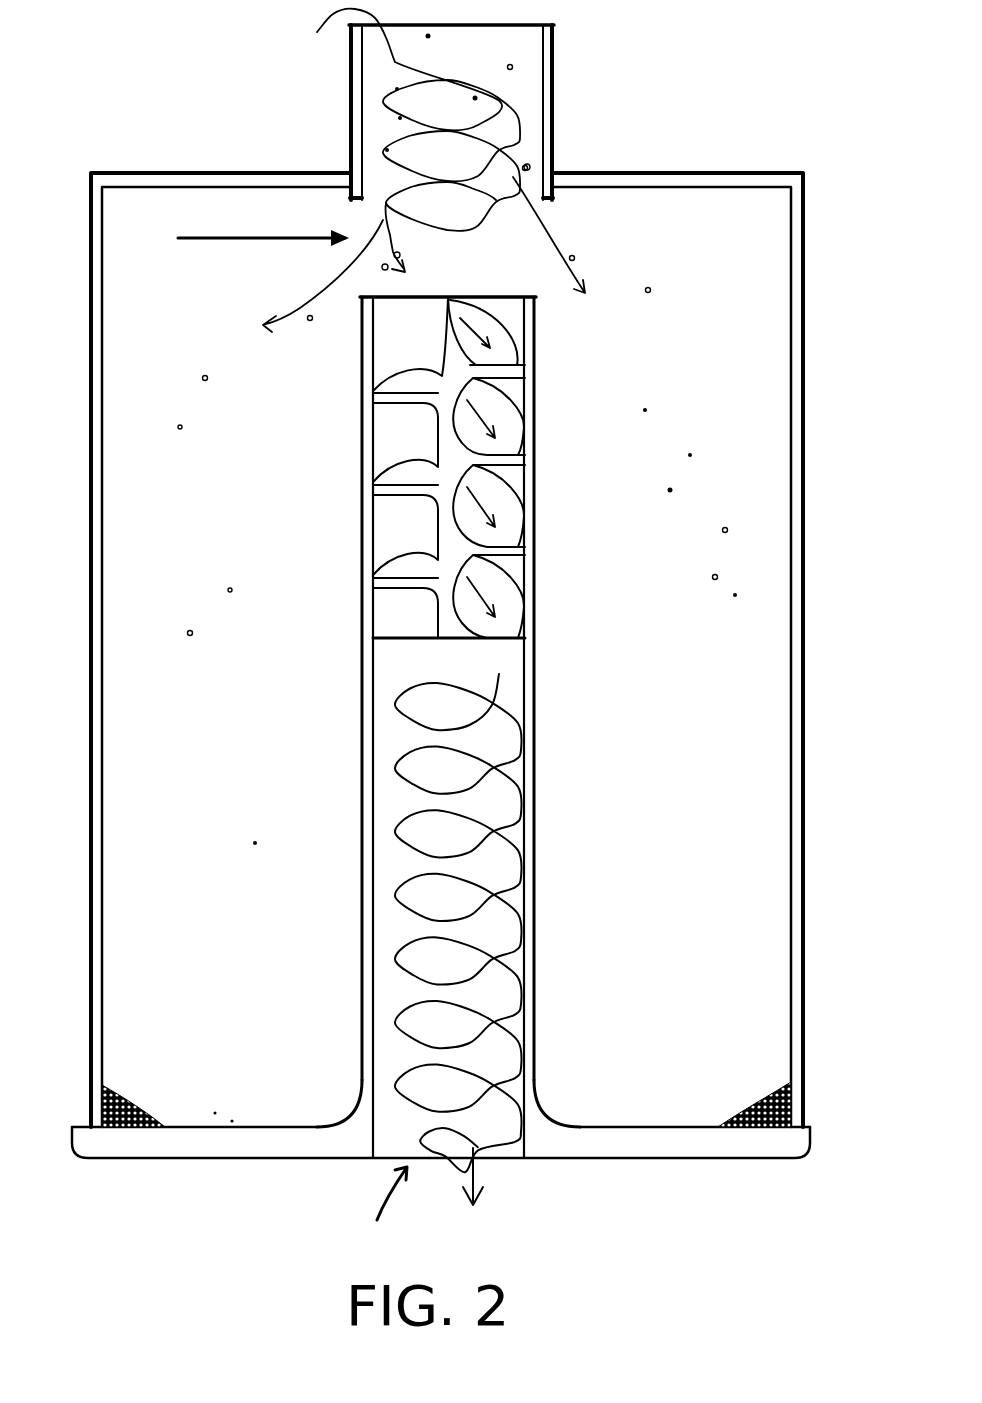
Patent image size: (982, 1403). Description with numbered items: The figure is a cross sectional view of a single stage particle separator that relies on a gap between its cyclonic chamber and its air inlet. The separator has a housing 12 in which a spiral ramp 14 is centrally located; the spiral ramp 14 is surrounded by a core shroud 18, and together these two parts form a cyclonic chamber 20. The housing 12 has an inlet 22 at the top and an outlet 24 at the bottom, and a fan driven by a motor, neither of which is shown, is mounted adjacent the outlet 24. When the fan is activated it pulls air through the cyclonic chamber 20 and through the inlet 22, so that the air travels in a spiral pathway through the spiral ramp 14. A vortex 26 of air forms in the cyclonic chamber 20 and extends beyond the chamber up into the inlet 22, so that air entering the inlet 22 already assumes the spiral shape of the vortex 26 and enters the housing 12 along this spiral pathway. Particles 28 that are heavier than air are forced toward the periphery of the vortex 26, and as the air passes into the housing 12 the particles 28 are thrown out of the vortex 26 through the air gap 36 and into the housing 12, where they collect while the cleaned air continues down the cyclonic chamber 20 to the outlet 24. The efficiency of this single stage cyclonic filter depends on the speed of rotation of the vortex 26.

The housing 12 is at (803, 607).
The spiral ramp 14 is at (520, 352).
The core shroud 18 is at (363, 382).
The cyclonic chamber 20 is at (377, 1213).
The inlet 22 is at (344, 38).
The outlet 24 is at (513, 1152).
The vortex 26 is at (385, 118).
The particles 28 is at (640, 287).
The air gap 36 is at (239, 240).